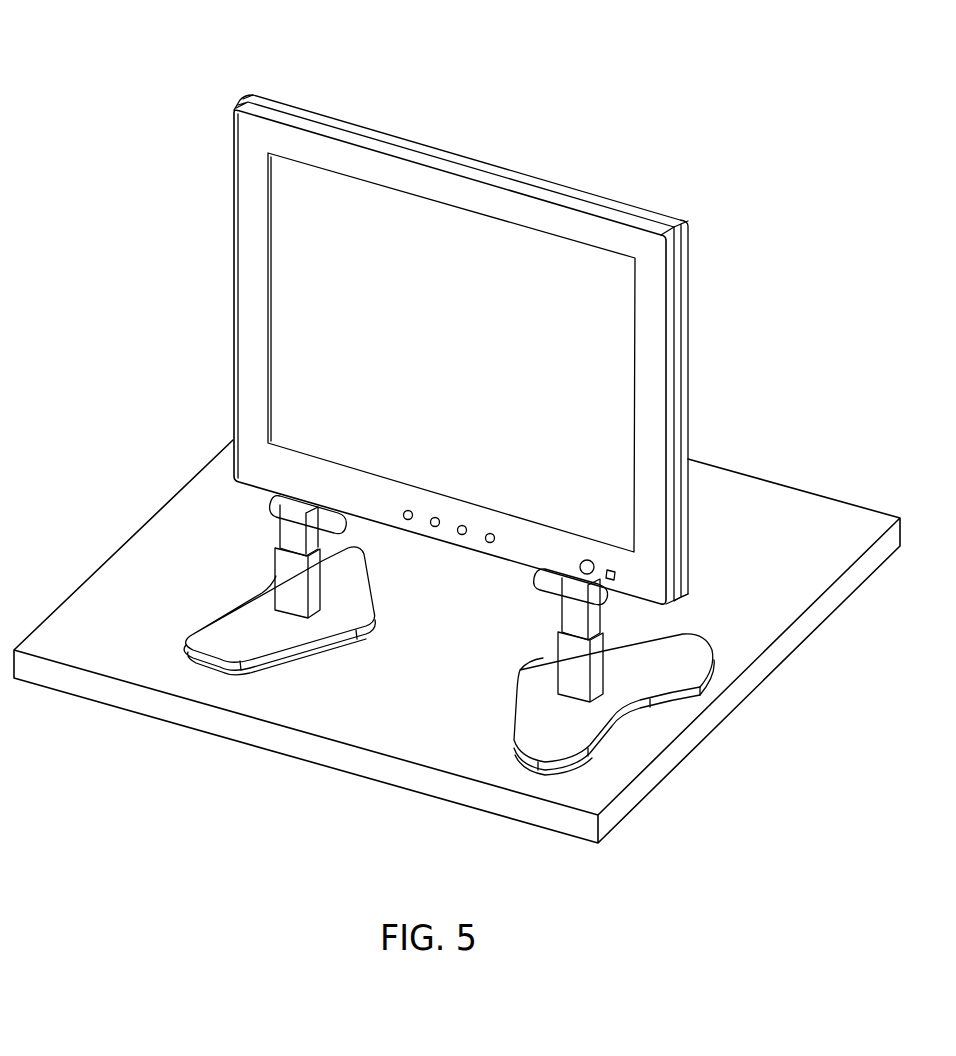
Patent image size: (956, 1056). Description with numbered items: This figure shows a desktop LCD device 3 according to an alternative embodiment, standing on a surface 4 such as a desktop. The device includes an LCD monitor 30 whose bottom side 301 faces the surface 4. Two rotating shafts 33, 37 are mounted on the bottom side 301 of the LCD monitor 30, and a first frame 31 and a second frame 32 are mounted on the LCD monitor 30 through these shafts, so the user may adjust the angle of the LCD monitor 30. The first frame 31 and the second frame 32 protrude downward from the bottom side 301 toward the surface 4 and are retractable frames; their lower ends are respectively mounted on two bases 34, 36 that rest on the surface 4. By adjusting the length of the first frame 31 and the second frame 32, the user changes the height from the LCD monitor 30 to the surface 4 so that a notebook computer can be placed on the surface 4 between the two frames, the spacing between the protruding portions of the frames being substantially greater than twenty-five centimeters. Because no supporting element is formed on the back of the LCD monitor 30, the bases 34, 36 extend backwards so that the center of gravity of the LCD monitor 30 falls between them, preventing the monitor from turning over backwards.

The desktop LCD device 3 is at (405, 418).
The LCD monitor 30 is at (310, 240).
The bottom side 301 is at (452, 545).
The first frame 31 is at (275, 528).
The second frame 32 is at (598, 658).
The rotating shaft 33 is at (267, 500).
The rotating shaft 37 is at (603, 598).
The base 34 is at (223, 632).
The base 36 is at (568, 720).
The surface 4 is at (849, 520).